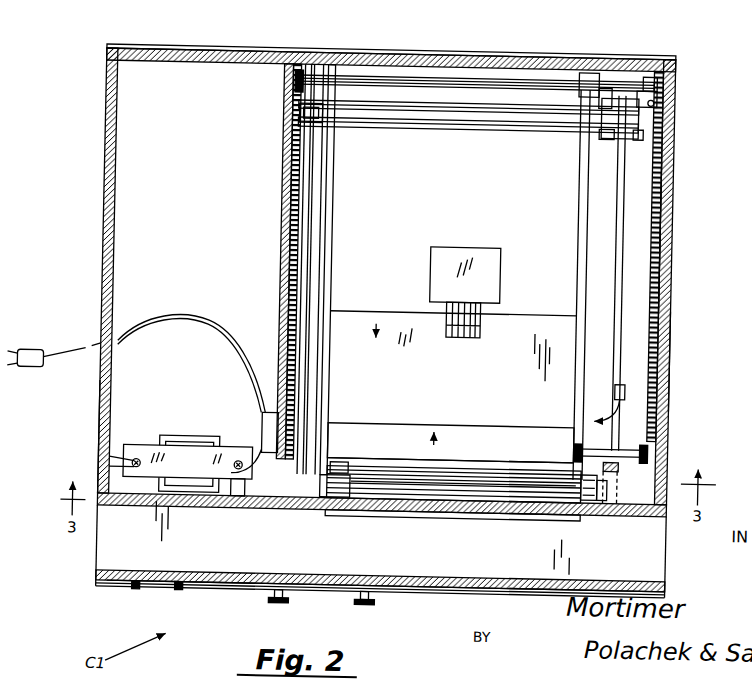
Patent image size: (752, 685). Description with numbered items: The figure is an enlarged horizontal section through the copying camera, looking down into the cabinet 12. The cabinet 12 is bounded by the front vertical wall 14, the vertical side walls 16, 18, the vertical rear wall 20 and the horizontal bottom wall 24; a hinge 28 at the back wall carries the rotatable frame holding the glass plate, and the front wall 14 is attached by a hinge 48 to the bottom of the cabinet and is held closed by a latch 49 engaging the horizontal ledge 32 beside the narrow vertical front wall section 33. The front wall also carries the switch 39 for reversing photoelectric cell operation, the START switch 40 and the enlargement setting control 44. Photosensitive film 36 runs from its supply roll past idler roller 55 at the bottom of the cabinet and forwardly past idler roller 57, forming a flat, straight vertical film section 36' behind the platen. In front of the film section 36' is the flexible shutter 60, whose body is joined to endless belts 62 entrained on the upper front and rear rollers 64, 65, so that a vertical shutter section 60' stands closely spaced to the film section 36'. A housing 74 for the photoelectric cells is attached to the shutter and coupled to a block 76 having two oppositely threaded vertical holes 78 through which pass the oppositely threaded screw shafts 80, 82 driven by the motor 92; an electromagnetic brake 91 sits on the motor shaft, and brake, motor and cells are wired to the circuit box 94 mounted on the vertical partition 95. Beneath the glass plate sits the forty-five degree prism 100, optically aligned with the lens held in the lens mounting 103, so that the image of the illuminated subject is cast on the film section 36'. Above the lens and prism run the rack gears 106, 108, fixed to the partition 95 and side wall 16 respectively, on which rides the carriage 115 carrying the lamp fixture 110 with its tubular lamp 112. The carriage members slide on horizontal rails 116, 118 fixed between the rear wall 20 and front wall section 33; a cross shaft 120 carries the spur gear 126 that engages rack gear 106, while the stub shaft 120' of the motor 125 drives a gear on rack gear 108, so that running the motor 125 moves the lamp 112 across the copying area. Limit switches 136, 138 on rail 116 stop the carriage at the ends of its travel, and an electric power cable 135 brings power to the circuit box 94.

The cabinet 12 is at (680, 270).
The front vertical wall 14 is at (660, 572).
The vertical side wall 16 is at (668, 333).
The vertical side wall 18 is at (108, 413).
The vertical rear wall 20 is at (257, 54).
The horizontal bottom wall 24 is at (107, 257).
The hinge 28 is at (352, 52).
The horizontal ledge 32 is at (120, 552).
The narrow vertical front wall section 33 is at (128, 500).
The film strip or sheet 36 is at (451, 564).
The vertical film section 36' is at (453, 511).
The switch 39 is at (148, 586).
The START switch 40 is at (192, 588).
The enlargement setting control 44 is at (293, 600).
The hinge 48 is at (250, 585).
The latch 49 is at (378, 600).
The idler roller 55 is at (570, 494).
The idler roller 57 is at (527, 494).
The shutter 60 is at (450, 425).
The vertical shutter section 60' is at (450, 428).
The endless belts 62 is at (337, 370).
The upper front roller 64 is at (614, 497).
The upper rear roller 65 is at (338, 77).
The housing 74 is at (350, 460).
The block 76 is at (153, 444).
The vertical threaded holes 78 is at (118, 456).
The screw shaft 80 is at (118, 466).
The screw shaft 82 is at (248, 494).
The electromagnetic brake 91 is at (228, 438).
The motor 92 is at (190, 437).
The circuit box 94 is at (270, 425).
The vertical partition 95 is at (289, 303).
The prism 100 is at (435, 262).
The lens mounting 103 is at (488, 312).
The rack gear 106 is at (282, 262).
The rack gear 108 is at (668, 229).
The lamp fixture 110 is at (497, 124).
The tubular lamp 112 is at (512, 106).
The carriage 115 is at (612, 135).
The horizontal rail 116 is at (290, 214).
The horizontal rail 118 is at (630, 191).
The cross shaft 120 is at (681, 106).
The stub shaft 120' is at (682, 88).
The motor 125 is at (607, 86).
The spur gear 126 is at (289, 110).
The electric power cable 135 is at (96, 348).
The limit switch 136 is at (634, 383).
The limit switch 138 is at (651, 76).